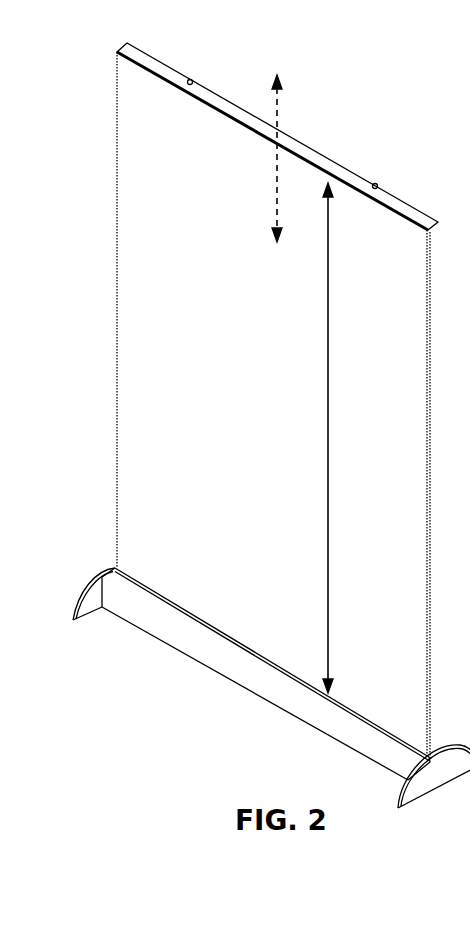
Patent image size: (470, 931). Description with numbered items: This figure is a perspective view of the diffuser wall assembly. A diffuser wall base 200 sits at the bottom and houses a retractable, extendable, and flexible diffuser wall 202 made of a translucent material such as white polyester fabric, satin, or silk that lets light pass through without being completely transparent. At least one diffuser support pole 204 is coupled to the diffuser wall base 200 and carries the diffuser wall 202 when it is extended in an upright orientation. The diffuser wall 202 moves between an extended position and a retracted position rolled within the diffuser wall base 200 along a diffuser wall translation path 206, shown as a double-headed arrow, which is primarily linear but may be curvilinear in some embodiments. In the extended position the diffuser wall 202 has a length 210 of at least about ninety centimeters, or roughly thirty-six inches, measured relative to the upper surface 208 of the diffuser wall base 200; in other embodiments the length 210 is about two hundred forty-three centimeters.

The diffuser wall base 200 is at (82, 595).
The diffuser wall 202 is at (137, 388).
The diffuser support pole 204 is at (375, 184).
The diffuser wall translation path 206 is at (276, 185).
The upper surface 208 is at (172, 624).
The length 210 is at (327, 520).